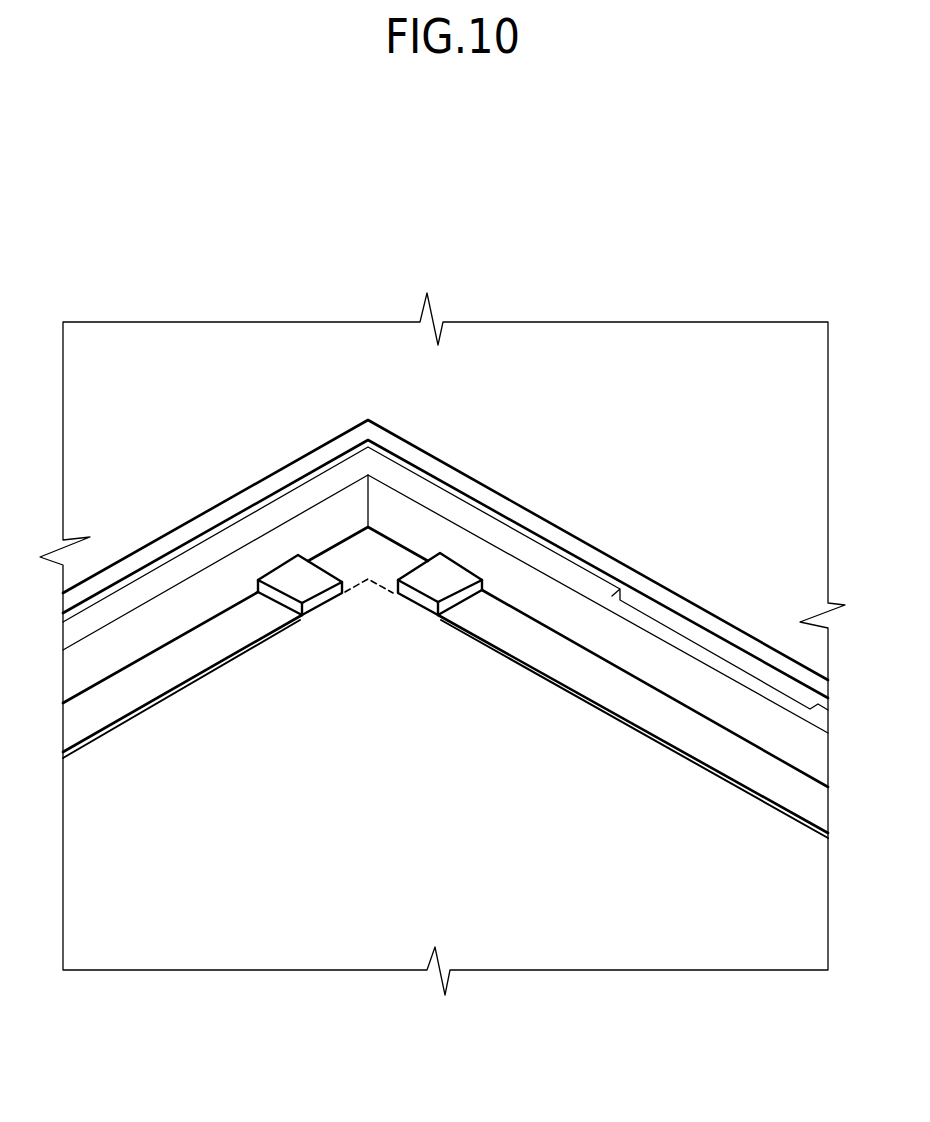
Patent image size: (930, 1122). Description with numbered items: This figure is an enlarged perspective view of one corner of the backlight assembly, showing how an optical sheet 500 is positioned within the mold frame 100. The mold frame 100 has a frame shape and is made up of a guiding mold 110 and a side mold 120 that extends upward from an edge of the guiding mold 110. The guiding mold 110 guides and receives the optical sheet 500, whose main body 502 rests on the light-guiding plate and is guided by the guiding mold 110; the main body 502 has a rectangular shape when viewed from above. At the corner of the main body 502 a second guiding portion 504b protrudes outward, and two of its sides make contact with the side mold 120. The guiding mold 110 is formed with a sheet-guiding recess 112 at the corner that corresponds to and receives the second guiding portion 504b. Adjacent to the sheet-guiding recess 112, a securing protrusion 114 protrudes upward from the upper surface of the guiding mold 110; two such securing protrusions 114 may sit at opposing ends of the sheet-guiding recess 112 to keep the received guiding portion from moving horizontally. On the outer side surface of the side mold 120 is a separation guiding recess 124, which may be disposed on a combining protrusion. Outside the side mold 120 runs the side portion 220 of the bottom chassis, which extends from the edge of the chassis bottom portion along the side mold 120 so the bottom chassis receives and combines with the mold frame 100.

The mold frame 100 is at (188, 453).
The guiding mold 110 is at (240, 630).
The side mold 120 is at (172, 578).
The sheet-guiding recess 112 is at (370, 546).
The securing protrusion 114 is at (440, 570).
The separation guiding recess 124 is at (748, 663).
The side portion 220 is at (533, 522).
The optical sheet 500 is at (358, 924).
The main body 502 is at (540, 887).
The second guiding portion 504b is at (333, 560).